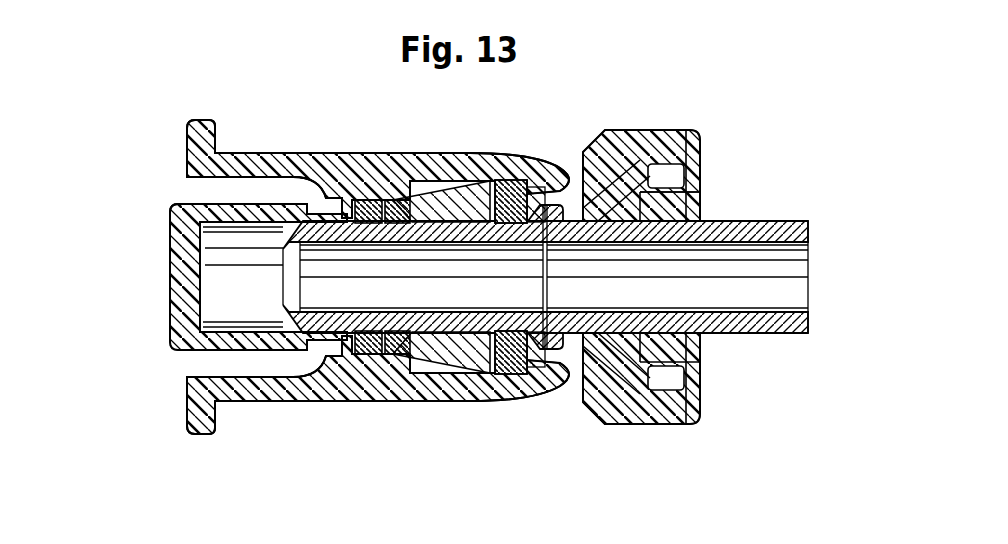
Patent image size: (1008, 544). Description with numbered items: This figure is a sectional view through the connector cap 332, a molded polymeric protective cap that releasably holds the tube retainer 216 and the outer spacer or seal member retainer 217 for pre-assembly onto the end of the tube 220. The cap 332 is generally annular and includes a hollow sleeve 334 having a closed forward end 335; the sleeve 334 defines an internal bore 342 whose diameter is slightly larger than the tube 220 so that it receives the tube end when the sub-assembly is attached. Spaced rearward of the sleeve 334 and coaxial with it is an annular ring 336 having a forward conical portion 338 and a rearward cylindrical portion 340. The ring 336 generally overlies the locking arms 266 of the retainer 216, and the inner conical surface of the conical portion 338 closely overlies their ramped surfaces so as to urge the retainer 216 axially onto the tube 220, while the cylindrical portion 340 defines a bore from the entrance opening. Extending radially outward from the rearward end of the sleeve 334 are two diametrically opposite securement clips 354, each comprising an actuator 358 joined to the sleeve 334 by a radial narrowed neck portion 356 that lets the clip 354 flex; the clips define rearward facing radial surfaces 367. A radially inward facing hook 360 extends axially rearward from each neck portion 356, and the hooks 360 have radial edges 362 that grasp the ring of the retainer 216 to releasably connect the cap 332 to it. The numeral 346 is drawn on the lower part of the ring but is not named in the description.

The tube retainer 216 is at (712, 181).
The outer spacer or seal member retainer 217 is at (410, 358).
The tube 220 is at (766, 335).
The locking arms 266 is at (644, 195).
The connector cap 332 is at (407, 141).
The hollow sleeve 334 is at (232, 198).
The closed forward end 335 is at (175, 243).
The annular ring 336 is at (675, 118).
The forward conical portion 338 is at (600, 148).
The rearward cylindrical portion 340 is at (690, 142).
The internal bore 342 is at (210, 292).
The lower nut portion 346 is at (623, 395).
The securement clip 354 is at (453, 142).
The radial narrowed neck portion 356 is at (340, 200).
The actuator 358 is at (190, 121).
The radially inward facing hook 360 is at (562, 175).
The radial edges 362 is at (487, 180).
The rearward facing radial surfaces 367 is at (372, 203).